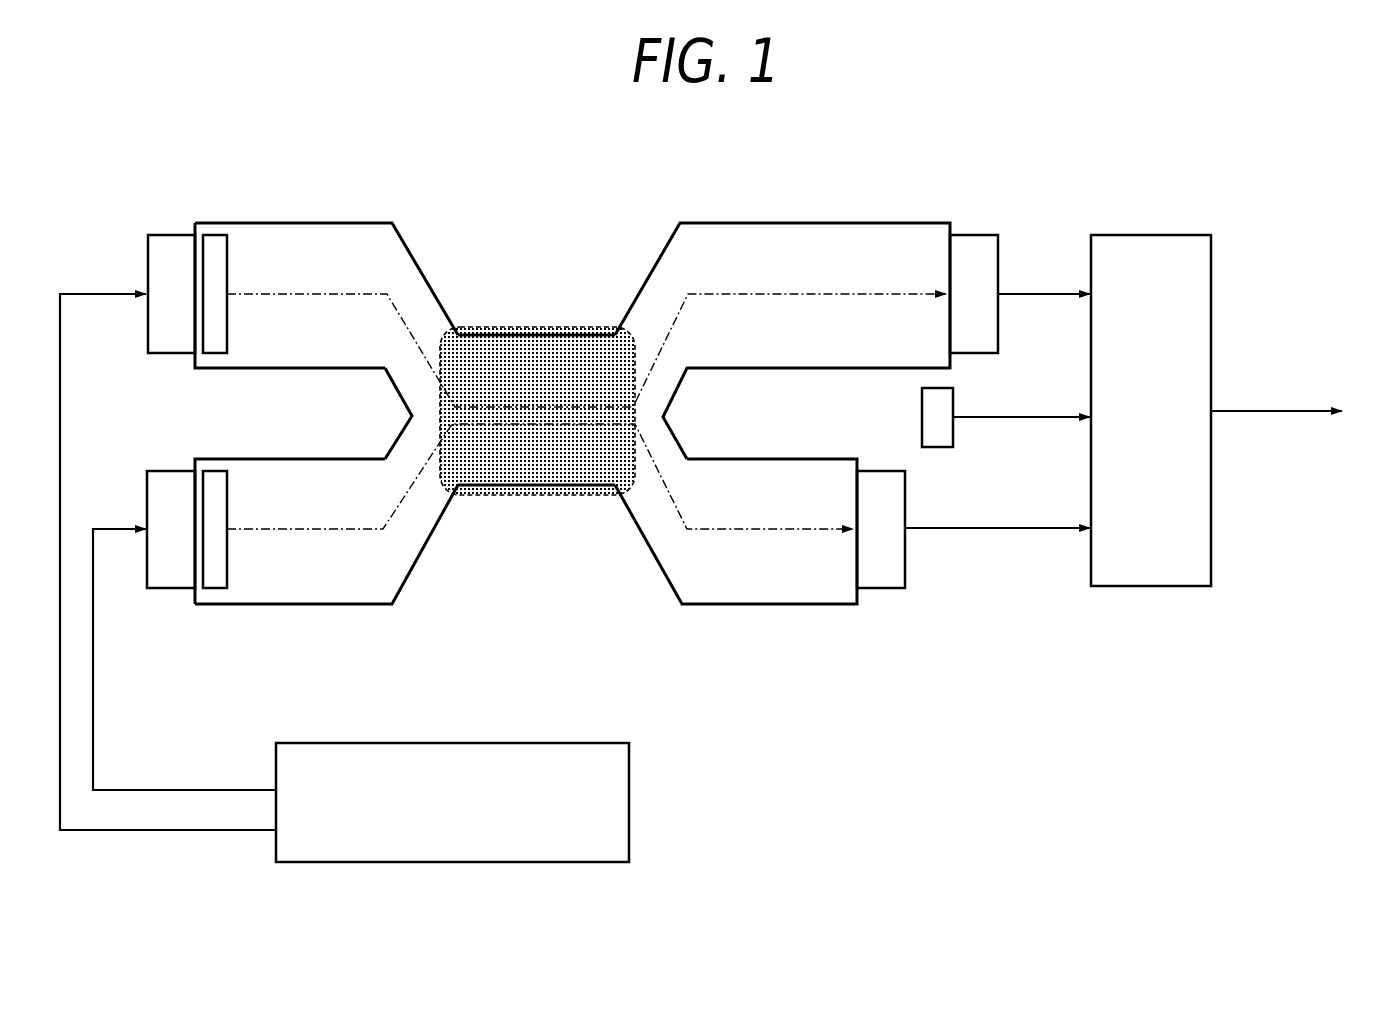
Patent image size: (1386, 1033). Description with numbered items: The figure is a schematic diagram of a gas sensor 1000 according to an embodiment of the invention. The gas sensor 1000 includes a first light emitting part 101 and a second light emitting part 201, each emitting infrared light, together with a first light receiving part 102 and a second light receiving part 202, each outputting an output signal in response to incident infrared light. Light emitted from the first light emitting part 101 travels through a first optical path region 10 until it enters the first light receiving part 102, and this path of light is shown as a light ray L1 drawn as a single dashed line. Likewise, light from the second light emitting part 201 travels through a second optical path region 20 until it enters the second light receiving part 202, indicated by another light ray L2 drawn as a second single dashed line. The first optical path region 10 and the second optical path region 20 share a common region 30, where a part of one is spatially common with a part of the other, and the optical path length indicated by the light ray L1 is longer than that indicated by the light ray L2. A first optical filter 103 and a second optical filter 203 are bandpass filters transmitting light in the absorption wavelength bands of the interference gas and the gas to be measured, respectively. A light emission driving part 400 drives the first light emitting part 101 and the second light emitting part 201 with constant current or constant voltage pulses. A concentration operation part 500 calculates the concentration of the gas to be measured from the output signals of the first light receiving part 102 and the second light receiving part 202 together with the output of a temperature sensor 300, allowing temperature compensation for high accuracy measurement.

The gas sensor 1000 is at (556, 157).
The first optical path region 10 is at (708, 223).
The second optical path region 20 is at (742, 604).
The common region 30 is at (537, 495).
The first light emitting part 101 is at (164, 235).
The first light receiving part 102 is at (975, 235).
The first optical filter 103 is at (215, 235).
The second light emitting part 201 is at (173, 588).
The second light receiving part 202 is at (882, 588).
The second optical filter 203 is at (215, 588).
The temperature sensor 300 is at (953, 436).
The light emission driving part 400 is at (629, 786).
The concentration operation part 500 is at (1151, 586).
The light ray L1 is at (402, 314).
The light ray L2 is at (390, 518).